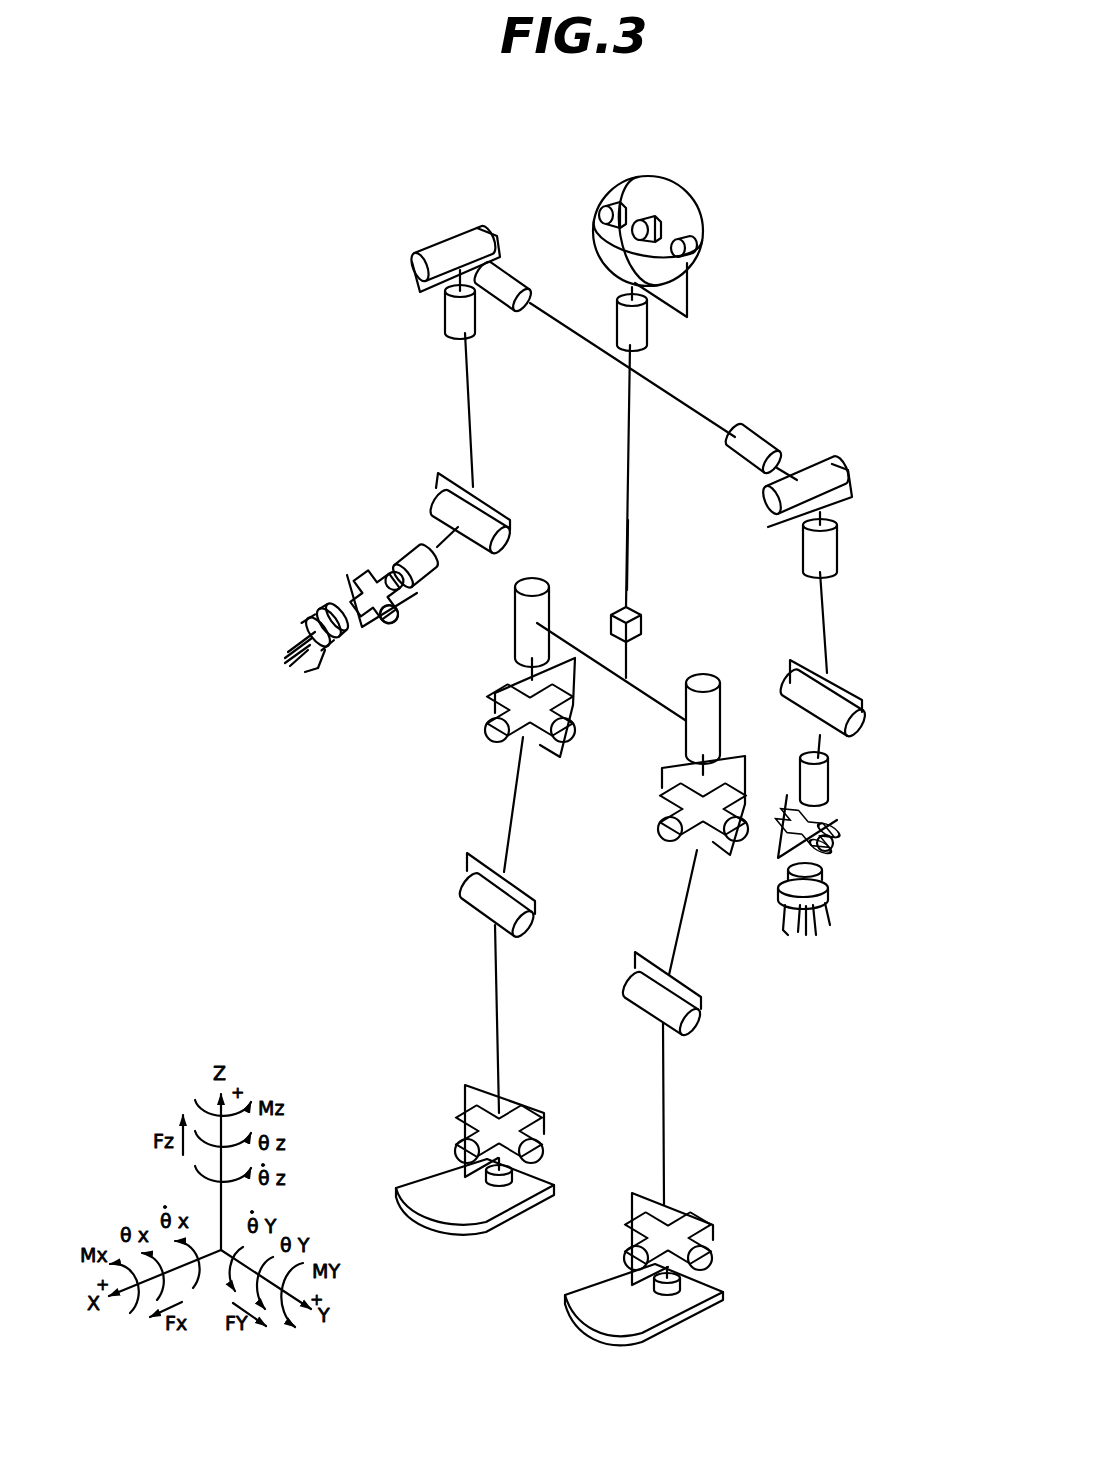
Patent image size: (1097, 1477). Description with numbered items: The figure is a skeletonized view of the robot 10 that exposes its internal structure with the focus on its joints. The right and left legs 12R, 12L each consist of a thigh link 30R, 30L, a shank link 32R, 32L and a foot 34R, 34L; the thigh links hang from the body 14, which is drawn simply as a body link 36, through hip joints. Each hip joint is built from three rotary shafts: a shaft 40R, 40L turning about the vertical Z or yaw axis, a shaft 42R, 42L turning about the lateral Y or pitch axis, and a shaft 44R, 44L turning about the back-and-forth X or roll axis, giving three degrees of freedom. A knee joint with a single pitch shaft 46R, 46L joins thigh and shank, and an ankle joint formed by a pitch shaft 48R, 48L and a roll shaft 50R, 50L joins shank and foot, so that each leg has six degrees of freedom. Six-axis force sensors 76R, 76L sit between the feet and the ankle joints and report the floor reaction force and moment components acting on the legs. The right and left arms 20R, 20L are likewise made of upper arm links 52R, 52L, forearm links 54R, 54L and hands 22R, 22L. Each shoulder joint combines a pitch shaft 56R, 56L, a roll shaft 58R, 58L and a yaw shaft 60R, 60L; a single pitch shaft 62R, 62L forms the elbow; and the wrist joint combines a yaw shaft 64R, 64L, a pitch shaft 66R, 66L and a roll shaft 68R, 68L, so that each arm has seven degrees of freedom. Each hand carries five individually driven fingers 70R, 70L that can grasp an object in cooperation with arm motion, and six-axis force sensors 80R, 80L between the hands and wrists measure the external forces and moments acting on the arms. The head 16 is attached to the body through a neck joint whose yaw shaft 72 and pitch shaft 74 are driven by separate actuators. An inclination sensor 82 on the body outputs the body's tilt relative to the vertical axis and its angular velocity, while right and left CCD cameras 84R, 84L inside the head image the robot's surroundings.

The robot 10 is at (783, 361).
The right leg 12R is at (432, 926).
The left leg 12L is at (734, 1051).
The body 14 is at (632, 496).
The head 16 is at (622, 177).
The right arm 20R is at (437, 431).
The left arm 20L is at (850, 656).
The right hand 22R is at (343, 648).
The left hand 22L is at (827, 903).
The right thigh link 30R is at (511, 847).
The left thigh link 30L is at (686, 925).
The right shank link 32R is at (495, 1026).
The left shank link 32L is at (665, 1105).
The right foot 34R is at (457, 1213).
The left foot 34L is at (630, 1320).
The body link 36 is at (630, 557).
The right hip yaw rotary shaft 40R is at (544, 597).
The left hip yaw rotary shaft 40L is at (714, 702).
The right hip pitch rotary shaft 42R is at (503, 678).
The left hip pitch rotary shaft 42L is at (665, 783).
The right hip roll rotary shaft 44R is at (500, 740).
The left hip roll rotary shaft 44L is at (672, 835).
The right knee rotary shaft 46R is at (540, 922).
The left knee rotary shaft 46L is at (705, 1018).
The right ankle pitch rotary shaft 48R is at (533, 1150).
The left ankle pitch rotary shaft 48L is at (703, 1250).
The right ankle roll rotary shaft 50R is at (524, 1103).
The left ankle roll rotary shaft 50L is at (695, 1213).
The right upper arm link 52R is at (472, 440).
The left upper arm link 52L is at (825, 607).
The right forearm link 54R is at (437, 540).
The left forearm link 54L is at (823, 733).
The right shoulder pitch rotary shaft 56R is at (512, 279).
The left shoulder pitch rotary shaft 56L is at (755, 444).
The right shoulder roll rotary shaft 58R is at (427, 248).
The left shoulder roll rotary shaft 58L is at (833, 462).
The right shoulder yaw rotary shaft 60R is at (446, 320).
The left shoulder yaw rotary shaft 60L is at (829, 545).
The right elbow rotary shaft 62R is at (512, 533).
The left elbow rotary shaft 62L is at (870, 712).
The right wrist yaw rotary shaft 64R is at (421, 568).
The left wrist yaw rotary shaft 64L is at (828, 773).
The right wrist pitch rotary shaft 66R is at (353, 588).
The left wrist pitch rotary shaft 66L is at (838, 842).
The right wrist roll rotary shaft 68R is at (368, 568).
The left wrist roll rotary shaft 68L is at (840, 820).
The fingers of right hand 70R is at (277, 659).
The fingers of left hand 70L is at (824, 939).
The neck yaw rotary shaft 72 is at (645, 332).
The neck pitch rotary shaft 74 is at (690, 245).
The right leg six-axis force sensor 76R is at (508, 1183).
The left leg six-axis force sensor 76L is at (680, 1286).
The right arm six-axis force sensor 80R is at (330, 605).
The left arm six-axis force sensor 80L is at (822, 875).
The inclination sensor 82 is at (640, 616).
The right CCD camera 84R is at (600, 210).
The left CCD camera 84L is at (657, 222).